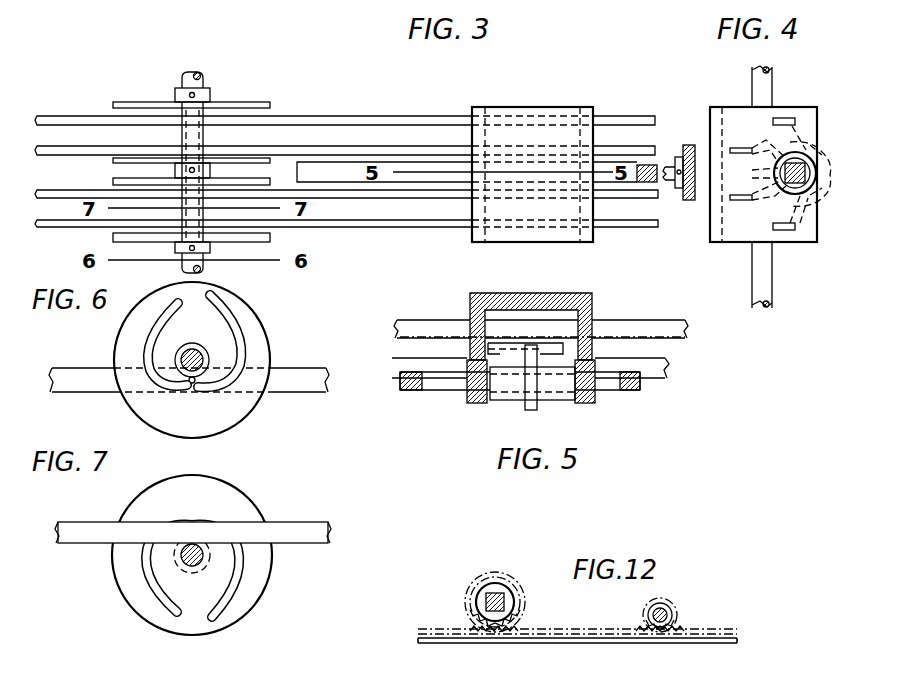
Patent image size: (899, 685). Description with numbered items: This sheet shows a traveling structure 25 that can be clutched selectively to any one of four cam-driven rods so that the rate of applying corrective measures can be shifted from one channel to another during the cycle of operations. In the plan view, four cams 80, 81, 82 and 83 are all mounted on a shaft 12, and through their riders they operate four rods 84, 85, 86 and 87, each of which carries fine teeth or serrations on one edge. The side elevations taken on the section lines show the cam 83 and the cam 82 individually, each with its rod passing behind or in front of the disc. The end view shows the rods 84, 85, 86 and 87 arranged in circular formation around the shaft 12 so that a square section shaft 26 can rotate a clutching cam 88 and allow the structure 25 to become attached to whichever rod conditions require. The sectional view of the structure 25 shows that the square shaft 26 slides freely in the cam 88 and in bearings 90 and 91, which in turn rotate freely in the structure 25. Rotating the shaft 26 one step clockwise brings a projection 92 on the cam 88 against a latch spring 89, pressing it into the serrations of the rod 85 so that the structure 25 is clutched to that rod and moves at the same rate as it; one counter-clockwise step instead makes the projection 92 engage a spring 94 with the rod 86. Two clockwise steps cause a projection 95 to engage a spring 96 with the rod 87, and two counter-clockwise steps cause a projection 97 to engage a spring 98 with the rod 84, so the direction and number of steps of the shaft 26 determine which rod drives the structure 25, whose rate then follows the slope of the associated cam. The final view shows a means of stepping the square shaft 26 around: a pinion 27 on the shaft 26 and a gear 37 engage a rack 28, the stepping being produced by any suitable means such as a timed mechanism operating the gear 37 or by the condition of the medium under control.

In FIG. 3, the shaft 12 is at (204, 78).
In FIG. 4, the shaft 12 is at (752, 292).
In FIG. 3, the structure 25 is at (534, 107).
In FIG. 4, the structure 25 is at (708, 240).
In FIG. 5, the structure 25 is at (550, 294).
In FIG. 3, the square section shaft 26 is at (620, 184).
In FIG. 5, the square section shaft 26 is at (430, 391).
In FIG. 12, the square section shaft 26 is at (484, 603).
In FIG. 4, the pinion 27 is at (688, 203).
In FIG. 12, the pinion 27 is at (512, 583).
In FIG. 12, the rack 28 is at (592, 648).
In FIG. 12, the gear 37 is at (678, 608).
In FIG. 3, the cam 80 is at (258, 105).
In FIG. 3, the cam 81 is at (270, 160).
In FIG. 3, the cam 82 is at (113, 181).
In FIG. 7, the cam 82 is at (240, 488).
In FIG. 3, the cam 83 is at (270, 240).
In FIG. 6, the cam 83 is at (271, 333).
In FIG. 3, the rod 84 is at (347, 116).
In FIG. 4, the rod 84 is at (786, 118).
In FIG. 3, the rod 85 is at (354, 147).
In FIG. 4, the rod 85 is at (731, 148).
In FIG. 5, the rod 85 is at (655, 320).
In FIG. 3, the rod 86 is at (360, 199).
In FIG. 4, the rod 86 is at (739, 201).
In FIG. 7, the rod 86 is at (294, 544).
In FIG. 3, the rod 87 is at (368, 228).
In FIG. 4, the rod 87 is at (784, 232).
In FIG. 6, the rod 87 is at (287, 393).
In FIG. 4, the clutching cam 88 is at (823, 176).
In FIG. 5, the clutching cam 88 is at (522, 405).
In FIG. 4, the latch spring 89 is at (758, 150).
In FIG. 5, the latch spring 89 is at (566, 350).
In FIG. 5, the bearing 90 is at (470, 404).
In FIG. 5, the bearing 91 is at (598, 403).
In FIG. 4, the projection 92 is at (757, 173).
In FIG. 4, the spring 94 is at (762, 201).
In FIG. 4, the projection 95 is at (813, 192).
In FIG. 4, the spring 96 is at (804, 216).
In FIG. 4, the projection 97 is at (822, 158).
In FIG. 4, the spring 98 is at (803, 137).